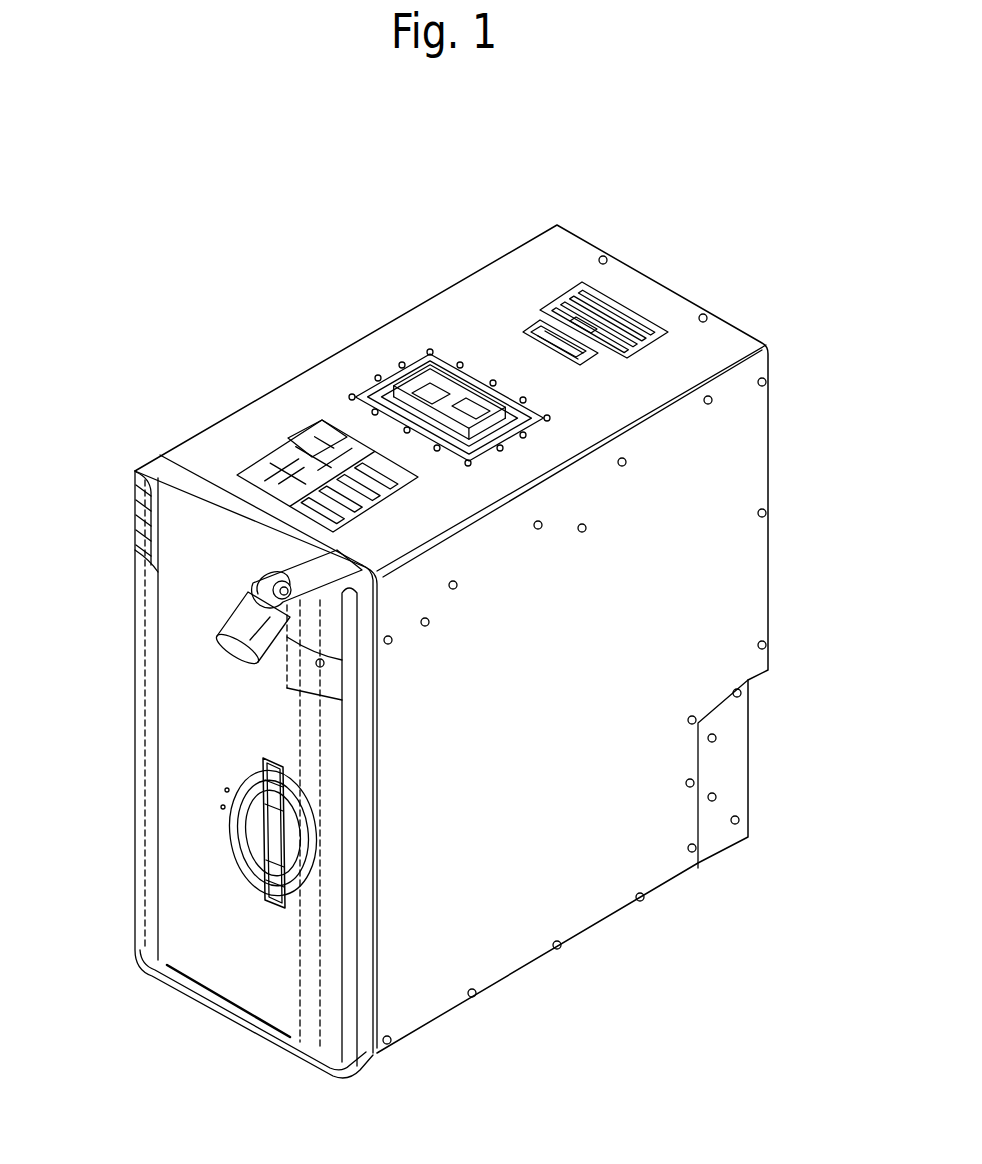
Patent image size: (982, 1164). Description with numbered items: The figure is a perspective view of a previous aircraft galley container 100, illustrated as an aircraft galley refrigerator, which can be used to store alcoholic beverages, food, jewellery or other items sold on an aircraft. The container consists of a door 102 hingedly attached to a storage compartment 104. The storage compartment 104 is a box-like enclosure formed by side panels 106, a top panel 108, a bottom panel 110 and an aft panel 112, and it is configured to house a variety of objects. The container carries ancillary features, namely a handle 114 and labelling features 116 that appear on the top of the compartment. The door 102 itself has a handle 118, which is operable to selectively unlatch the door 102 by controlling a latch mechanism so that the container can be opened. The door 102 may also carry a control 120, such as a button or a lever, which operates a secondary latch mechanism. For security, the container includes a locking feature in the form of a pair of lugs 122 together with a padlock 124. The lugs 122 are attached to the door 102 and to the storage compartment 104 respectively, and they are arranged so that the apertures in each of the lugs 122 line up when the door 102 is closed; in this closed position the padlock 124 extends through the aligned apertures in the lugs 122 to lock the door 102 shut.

The aircraft galley container 100 is at (230, 262).
The door 102 is at (190, 710).
The storage compartment 104 is at (655, 592).
The side panels 106 is at (450, 276).
The top panel 108 is at (707, 350).
The bottom panel 110 is at (540, 972).
The aft panel 112 is at (781, 459).
The handle 114 is at (400, 400).
The labelling features 116 is at (630, 310).
The handle 118 is at (273, 853).
The control 120 is at (262, 768).
The lugs 122 is at (312, 567).
The padlock 124 is at (230, 617).